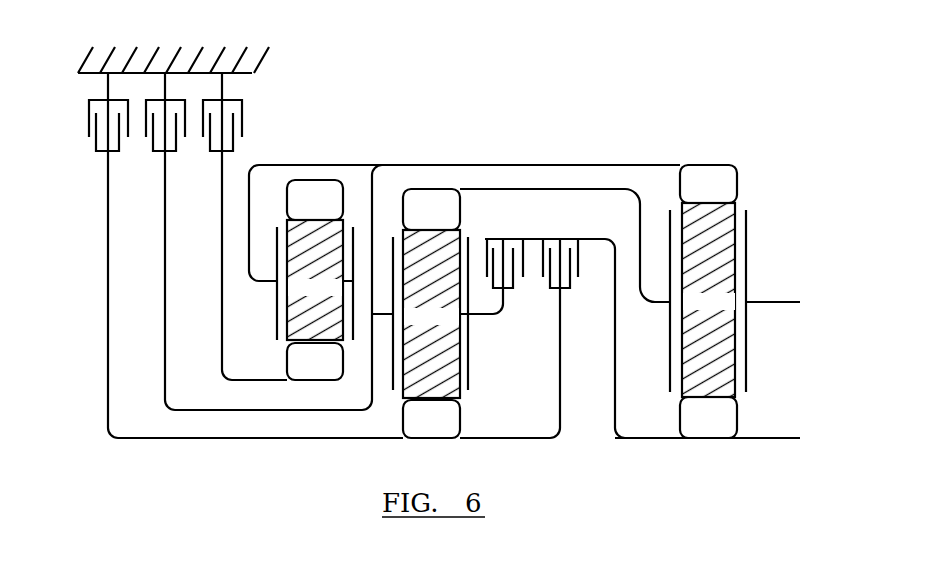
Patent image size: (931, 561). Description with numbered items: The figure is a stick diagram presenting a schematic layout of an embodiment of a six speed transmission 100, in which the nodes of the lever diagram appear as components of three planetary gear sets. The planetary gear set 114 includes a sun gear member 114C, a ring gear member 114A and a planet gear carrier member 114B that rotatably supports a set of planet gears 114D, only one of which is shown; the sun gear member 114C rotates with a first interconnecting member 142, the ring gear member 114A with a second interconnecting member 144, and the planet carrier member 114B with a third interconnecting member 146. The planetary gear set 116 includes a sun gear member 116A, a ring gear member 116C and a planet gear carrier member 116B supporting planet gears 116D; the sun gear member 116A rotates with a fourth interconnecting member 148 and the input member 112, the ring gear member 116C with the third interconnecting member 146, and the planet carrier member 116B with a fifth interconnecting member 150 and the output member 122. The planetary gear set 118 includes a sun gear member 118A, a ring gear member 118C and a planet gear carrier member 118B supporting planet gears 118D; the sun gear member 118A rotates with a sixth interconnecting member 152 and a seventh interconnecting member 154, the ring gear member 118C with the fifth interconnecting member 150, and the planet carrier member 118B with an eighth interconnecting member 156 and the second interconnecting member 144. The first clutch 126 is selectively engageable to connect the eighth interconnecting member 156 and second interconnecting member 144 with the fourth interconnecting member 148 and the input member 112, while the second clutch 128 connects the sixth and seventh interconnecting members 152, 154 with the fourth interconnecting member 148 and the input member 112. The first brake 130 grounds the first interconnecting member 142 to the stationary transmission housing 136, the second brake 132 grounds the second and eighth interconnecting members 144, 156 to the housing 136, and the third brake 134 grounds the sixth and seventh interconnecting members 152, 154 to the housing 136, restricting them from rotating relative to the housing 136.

The six speed transmission 100 is at (702, 83).
The input member 112 is at (787, 440).
The planetary gear set 114 is at (313, 310).
The ring gear member 114A is at (312, 192).
The planet gear carrier member 114B is at (277, 314).
The sun gear member 114C is at (302, 366).
The planet gears 114D is at (338, 295).
The planetary gear set 116 is at (718, 310).
The sun gear member 116A is at (698, 419).
The planet gear carrier member 116B is at (748, 247).
The ring gear member 116C is at (705, 183).
The planet gears 116D is at (733, 310).
The planetary gear set 118 is at (441, 297).
The sun gear member 118A is at (413, 418).
The planet gear carrier member 118B is at (470, 368).
The ring gear member 118C is at (428, 200).
The planet gears 118D is at (454, 325).
The output member 122 is at (787, 303).
The first clutch 126 is at (477, 250).
The second clutch 128 is at (580, 263).
The first brake 130 is at (243, 112).
The second brake 132 is at (146, 128).
The third brake 134 is at (88, 128).
The transmission housing 136 is at (266, 57).
The first interconnecting member 142 is at (222, 210).
The second interconnecting member 144 is at (165, 322).
The third interconnecting member 146 is at (625, 165).
The fourth interconnecting member 148 is at (533, 239).
The fifth interconnecting member 150 is at (552, 189).
The sixth interconnecting member 152 is at (108, 250).
The seventh interconnecting member 154 is at (530, 441).
The eighth interconnecting member 156 is at (482, 316).